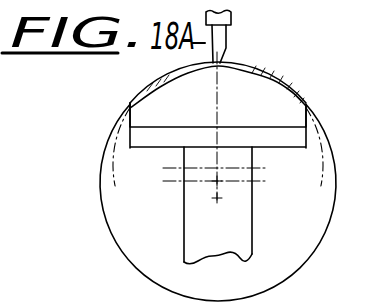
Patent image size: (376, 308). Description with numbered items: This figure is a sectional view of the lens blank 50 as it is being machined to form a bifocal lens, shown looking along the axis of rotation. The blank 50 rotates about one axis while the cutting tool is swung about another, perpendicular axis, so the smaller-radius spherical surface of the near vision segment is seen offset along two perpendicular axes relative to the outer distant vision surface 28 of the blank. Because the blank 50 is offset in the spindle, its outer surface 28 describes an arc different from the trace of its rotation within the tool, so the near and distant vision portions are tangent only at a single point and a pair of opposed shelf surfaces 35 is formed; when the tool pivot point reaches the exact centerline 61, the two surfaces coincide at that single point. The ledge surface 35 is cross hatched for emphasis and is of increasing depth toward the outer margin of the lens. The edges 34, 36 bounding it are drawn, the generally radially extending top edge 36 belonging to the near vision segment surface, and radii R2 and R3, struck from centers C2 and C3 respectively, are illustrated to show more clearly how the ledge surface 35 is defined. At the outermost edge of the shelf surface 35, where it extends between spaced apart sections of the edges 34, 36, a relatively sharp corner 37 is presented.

The surface of the lens blank 28 is at (240, 63).
The edge 34 is at (141, 92).
The shelf surface 35 is at (292, 96).
The top edge 36 is at (305, 101).
The sharp corner 37 is at (130, 108).
The blank 50 is at (141, 148).
The centerline 61 is at (252, 172).
The radius R-3 R3 is at (217, 181).
The radius R-2 R2 is at (325, 134).
The center C3 is at (217, 182).
The center C2 is at (217, 199).